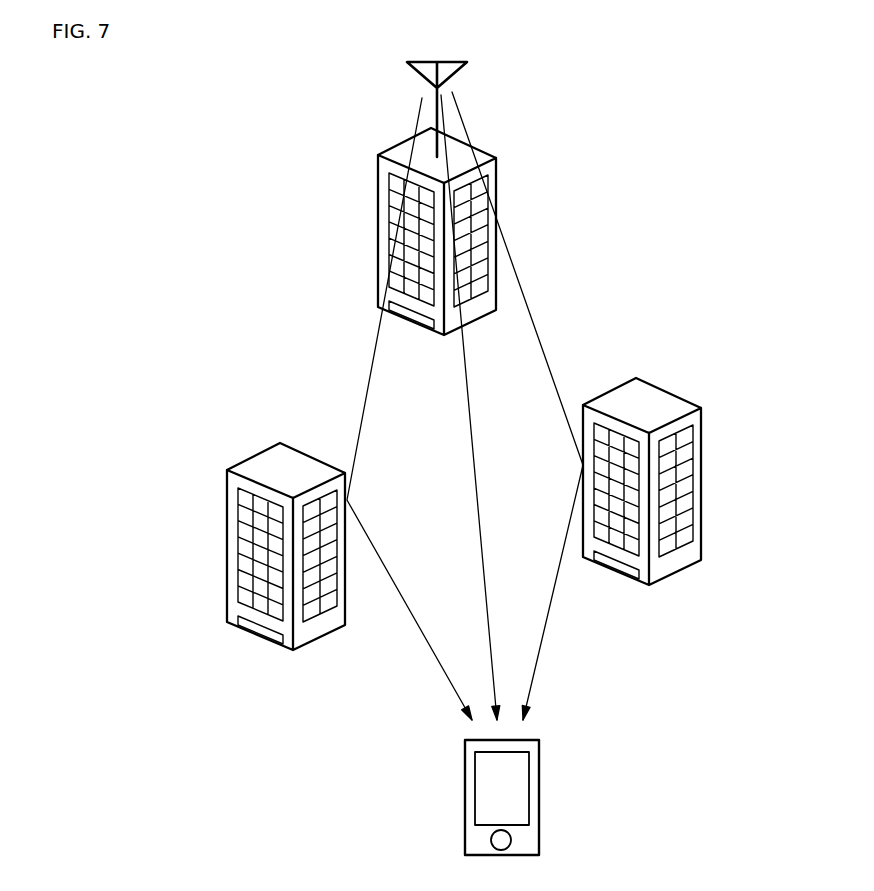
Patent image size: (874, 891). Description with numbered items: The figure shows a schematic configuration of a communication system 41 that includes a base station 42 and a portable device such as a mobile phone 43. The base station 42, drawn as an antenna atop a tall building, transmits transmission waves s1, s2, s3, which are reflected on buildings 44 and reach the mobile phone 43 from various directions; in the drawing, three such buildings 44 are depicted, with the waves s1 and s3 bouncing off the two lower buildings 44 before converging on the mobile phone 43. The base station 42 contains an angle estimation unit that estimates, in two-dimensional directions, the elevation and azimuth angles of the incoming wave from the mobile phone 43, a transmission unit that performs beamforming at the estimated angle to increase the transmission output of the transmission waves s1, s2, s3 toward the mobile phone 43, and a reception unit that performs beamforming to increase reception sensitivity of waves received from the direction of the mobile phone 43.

The communication system 41 is at (651, 116).
The base station 42 is at (418, 71).
The mobile phone 43 is at (540, 782).
The buildings 44 is at (499, 172).
The transmission wave s1 is at (408, 409).
The transmission wave s2 is at (469, 407).
The transmission wave s3 is at (517, 406).